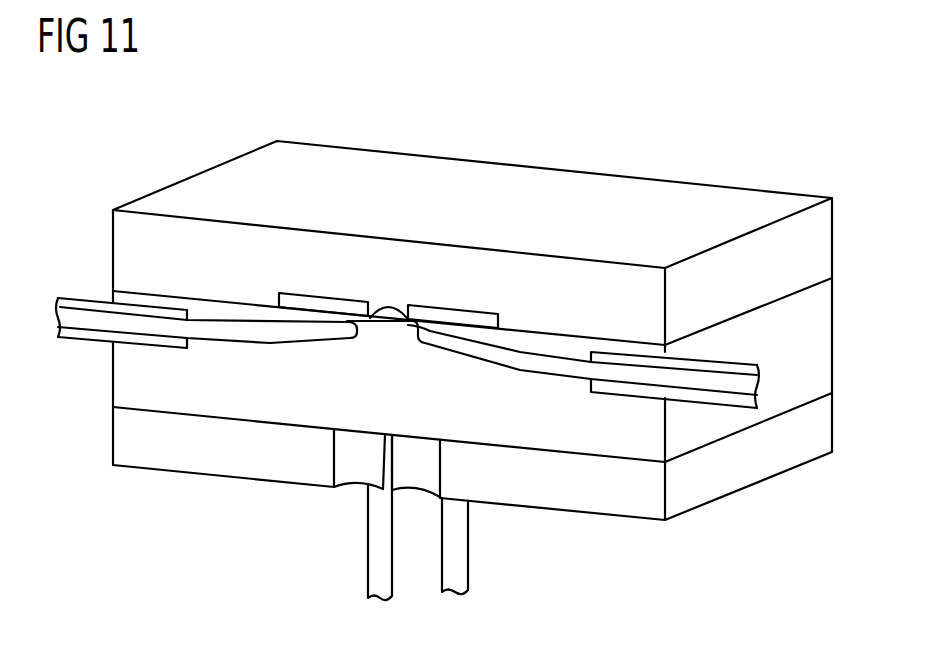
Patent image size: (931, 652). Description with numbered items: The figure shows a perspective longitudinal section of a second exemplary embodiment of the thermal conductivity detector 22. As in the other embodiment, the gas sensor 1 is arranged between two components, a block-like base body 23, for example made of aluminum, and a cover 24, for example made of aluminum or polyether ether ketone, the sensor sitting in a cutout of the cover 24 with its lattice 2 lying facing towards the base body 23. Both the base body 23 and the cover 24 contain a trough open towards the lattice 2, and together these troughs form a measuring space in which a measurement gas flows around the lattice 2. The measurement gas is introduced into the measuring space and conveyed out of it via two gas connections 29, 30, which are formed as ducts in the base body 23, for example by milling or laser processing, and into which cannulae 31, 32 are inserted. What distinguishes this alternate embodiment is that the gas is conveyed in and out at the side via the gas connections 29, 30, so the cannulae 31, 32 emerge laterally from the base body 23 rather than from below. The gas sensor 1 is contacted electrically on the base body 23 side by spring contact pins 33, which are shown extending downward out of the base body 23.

The gas sensor 1 is at (322, 292).
The lattice 2 is at (390, 325).
The thermal conductivity detector 22 is at (437, 298).
The base body 23 is at (125, 380).
The cover 24 is at (492, 185).
The gas connection 29 is at (253, 333).
The gas connection 30 is at (498, 352).
The cannula 31 is at (72, 304).
The cannula 32 is at (718, 398).
The spring contact pins 33 is at (369, 548).